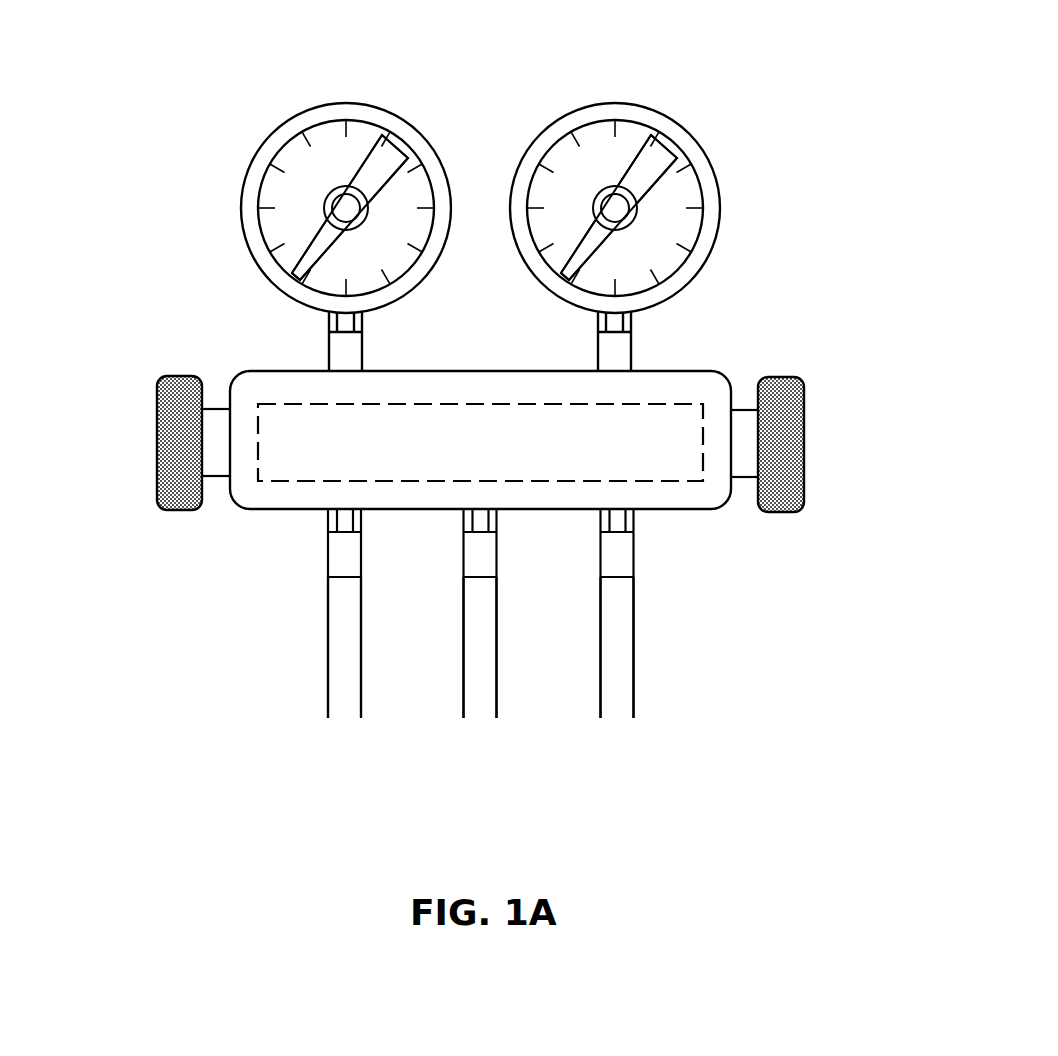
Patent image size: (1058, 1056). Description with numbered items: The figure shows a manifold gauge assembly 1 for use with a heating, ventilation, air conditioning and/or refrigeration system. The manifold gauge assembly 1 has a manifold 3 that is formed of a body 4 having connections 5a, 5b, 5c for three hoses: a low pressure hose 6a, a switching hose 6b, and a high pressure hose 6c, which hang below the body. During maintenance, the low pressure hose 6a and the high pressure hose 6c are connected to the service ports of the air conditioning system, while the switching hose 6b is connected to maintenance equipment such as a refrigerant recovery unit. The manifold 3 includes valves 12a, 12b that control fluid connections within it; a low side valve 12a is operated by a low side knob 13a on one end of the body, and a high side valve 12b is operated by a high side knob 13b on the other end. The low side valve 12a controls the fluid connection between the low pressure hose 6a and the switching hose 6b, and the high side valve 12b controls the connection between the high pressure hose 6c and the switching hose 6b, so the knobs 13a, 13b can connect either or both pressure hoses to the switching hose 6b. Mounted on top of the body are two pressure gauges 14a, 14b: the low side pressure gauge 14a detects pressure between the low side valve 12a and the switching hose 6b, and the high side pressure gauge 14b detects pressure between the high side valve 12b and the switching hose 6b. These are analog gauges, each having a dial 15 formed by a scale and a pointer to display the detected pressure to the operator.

The manifold gauge assembly 1 is at (150, 79).
The manifold 3 is at (715, 385).
The body 4 is at (480, 442).
The low side pressure gauge 14a is at (353, 103).
The high side pressure gauge 14b is at (610, 117).
The dial 15 is at (408, 173).
The low side knob 13a is at (172, 437).
The high side knob 13b is at (787, 425).
The low side valve 12a is at (272, 472).
The high side valve 12b is at (658, 450).
The connection 5a is at (343, 522).
The connection 5b is at (485, 522).
The connection 5c is at (620, 523).
The low pressure hose 6a is at (342, 702).
The switching hose 6b is at (480, 703).
The high pressure hose 6c is at (617, 703).